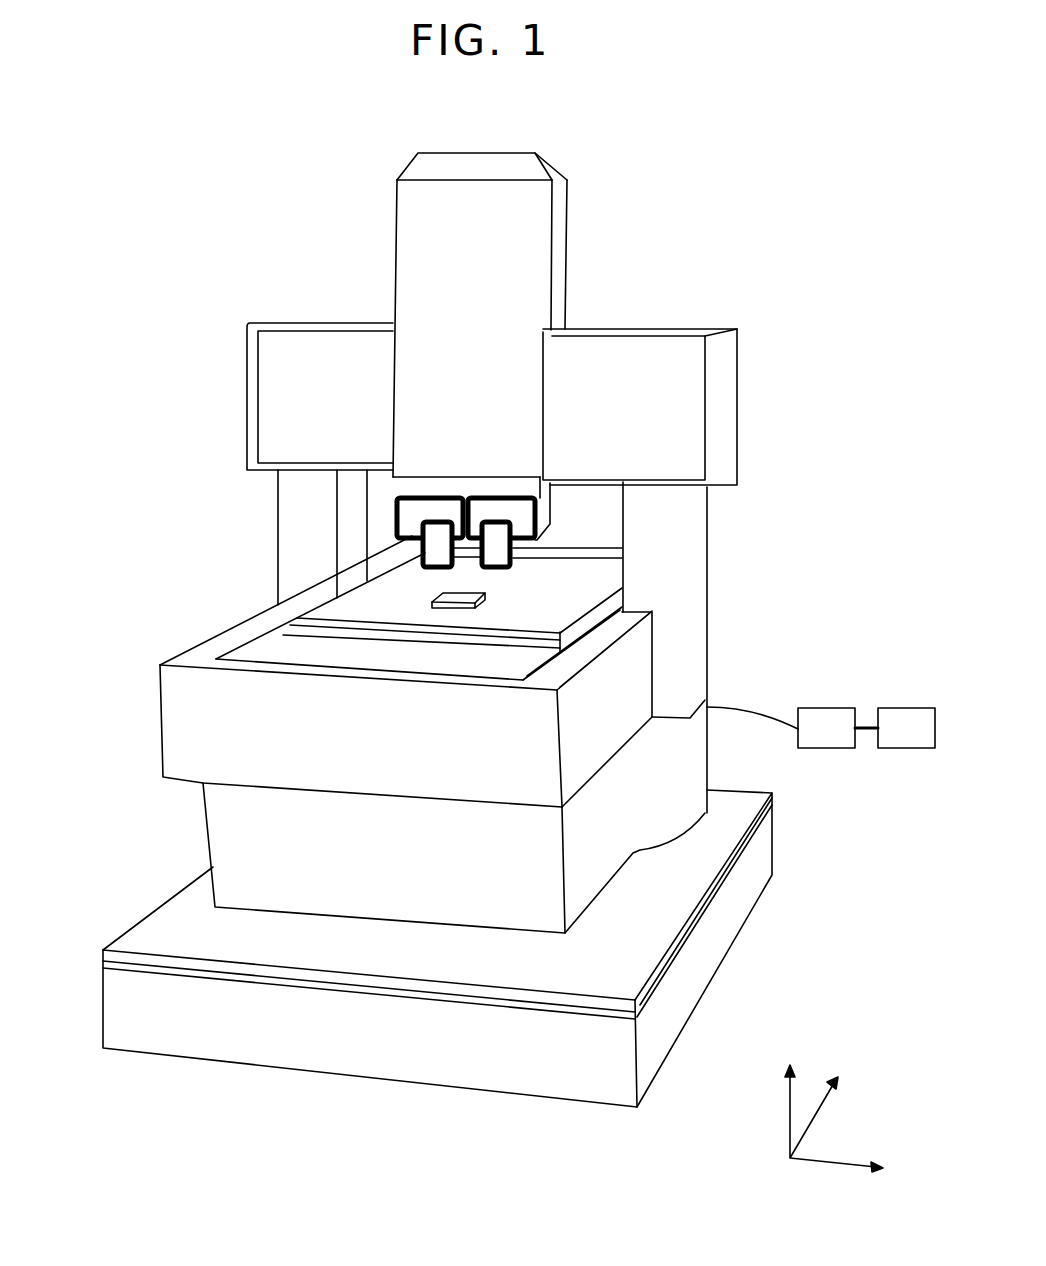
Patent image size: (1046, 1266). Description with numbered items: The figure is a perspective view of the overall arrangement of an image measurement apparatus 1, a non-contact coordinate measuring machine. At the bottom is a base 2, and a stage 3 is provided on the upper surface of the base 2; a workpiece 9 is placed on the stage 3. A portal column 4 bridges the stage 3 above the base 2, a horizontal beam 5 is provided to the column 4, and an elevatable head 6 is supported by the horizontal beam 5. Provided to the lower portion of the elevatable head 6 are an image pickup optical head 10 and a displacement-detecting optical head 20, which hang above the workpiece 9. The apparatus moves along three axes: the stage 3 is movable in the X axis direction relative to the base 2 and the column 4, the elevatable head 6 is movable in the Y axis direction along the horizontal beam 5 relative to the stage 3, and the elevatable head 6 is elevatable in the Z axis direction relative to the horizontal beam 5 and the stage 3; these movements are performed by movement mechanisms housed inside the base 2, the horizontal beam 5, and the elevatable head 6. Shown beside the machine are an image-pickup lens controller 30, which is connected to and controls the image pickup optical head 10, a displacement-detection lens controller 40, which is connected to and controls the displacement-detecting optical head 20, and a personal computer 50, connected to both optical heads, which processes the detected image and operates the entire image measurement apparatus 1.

The image measurement apparatus 1 is at (667, 172).
The base 2 is at (157, 723).
The stage 3 is at (313, 610).
The portal column 4 is at (250, 324).
The horizontal beam 5 is at (325, 362).
The elevatable head 6 is at (530, 249).
The workpiece 9 is at (462, 594).
The image pickup optical head 10 is at (433, 535).
The displacement-detecting optical head 20 is at (497, 540).
The image-pickup lens controller 30 is at (822, 708).
The displacement-detection lens controller 40 is at (826, 728).
The personal computer 50 is at (900, 708).